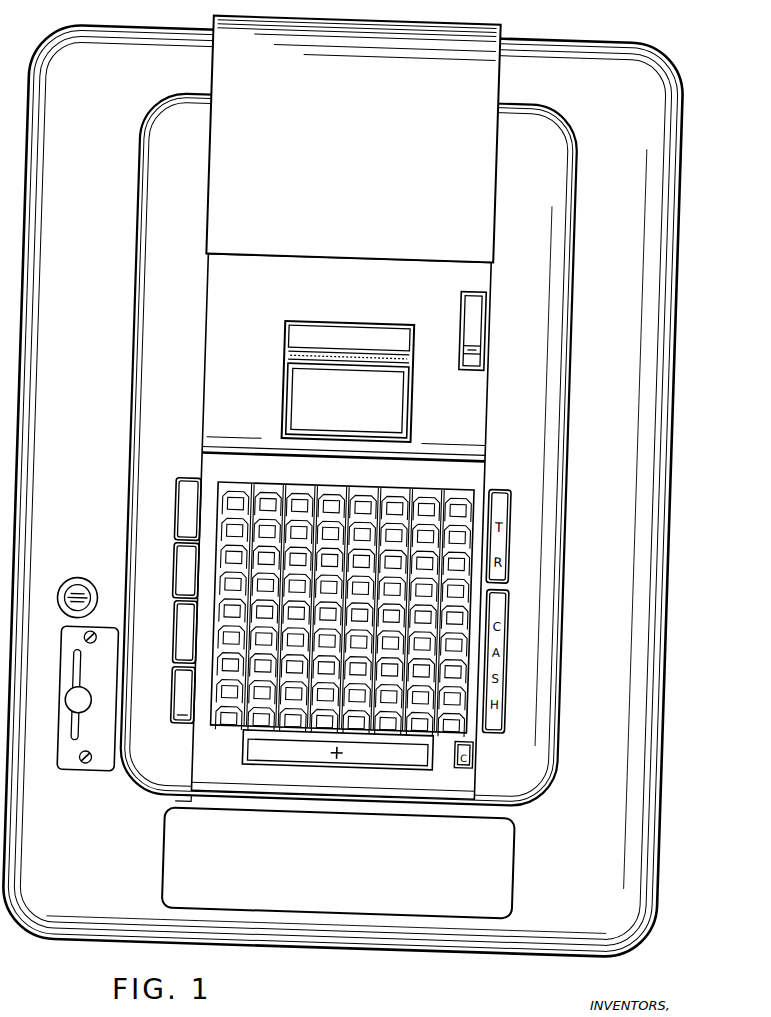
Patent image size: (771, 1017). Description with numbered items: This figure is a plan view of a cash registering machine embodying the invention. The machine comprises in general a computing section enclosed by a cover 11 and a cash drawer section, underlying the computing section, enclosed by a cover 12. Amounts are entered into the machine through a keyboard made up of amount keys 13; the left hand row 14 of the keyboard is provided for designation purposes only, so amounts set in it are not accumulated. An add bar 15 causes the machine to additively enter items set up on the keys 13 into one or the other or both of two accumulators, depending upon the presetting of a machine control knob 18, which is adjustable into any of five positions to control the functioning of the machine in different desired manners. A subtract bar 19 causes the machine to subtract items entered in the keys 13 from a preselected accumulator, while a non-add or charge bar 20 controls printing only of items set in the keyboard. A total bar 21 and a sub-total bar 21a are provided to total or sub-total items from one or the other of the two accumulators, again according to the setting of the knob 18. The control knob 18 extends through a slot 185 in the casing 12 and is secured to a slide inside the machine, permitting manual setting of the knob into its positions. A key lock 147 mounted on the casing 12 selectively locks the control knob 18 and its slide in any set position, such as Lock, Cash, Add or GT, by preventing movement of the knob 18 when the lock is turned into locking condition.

The cover 11 is at (560, 505).
The cover 12 is at (663, 739).
The amount keys 13 is at (456, 492).
The left hand row 14 is at (360, 618).
The add bar 15 is at (397, 762).
The machine control knob 18 is at (72, 706).
The subtract bar 19 is at (180, 700).
The non-add or charge bar 20 is at (179, 647).
The total bar 21 is at (186, 503).
The sub-total bar 21a is at (185, 562).
The key lock 147 is at (82, 596).
The slot 185 is at (78, 746).